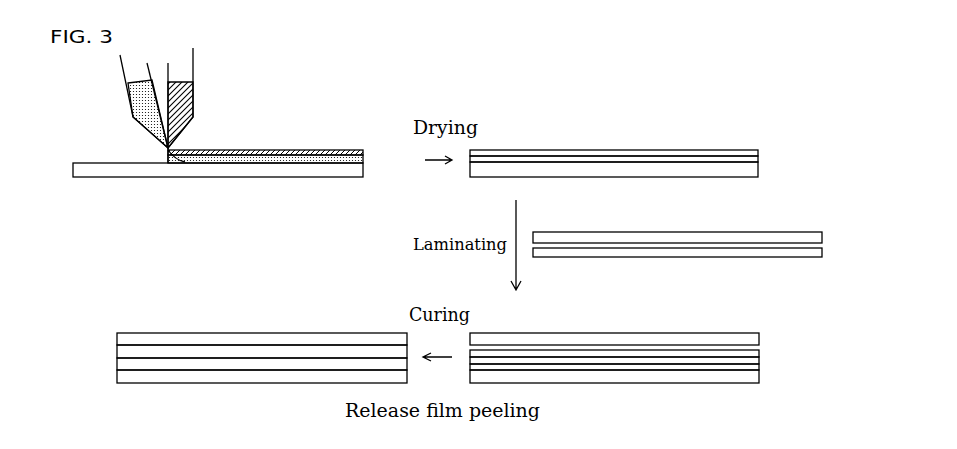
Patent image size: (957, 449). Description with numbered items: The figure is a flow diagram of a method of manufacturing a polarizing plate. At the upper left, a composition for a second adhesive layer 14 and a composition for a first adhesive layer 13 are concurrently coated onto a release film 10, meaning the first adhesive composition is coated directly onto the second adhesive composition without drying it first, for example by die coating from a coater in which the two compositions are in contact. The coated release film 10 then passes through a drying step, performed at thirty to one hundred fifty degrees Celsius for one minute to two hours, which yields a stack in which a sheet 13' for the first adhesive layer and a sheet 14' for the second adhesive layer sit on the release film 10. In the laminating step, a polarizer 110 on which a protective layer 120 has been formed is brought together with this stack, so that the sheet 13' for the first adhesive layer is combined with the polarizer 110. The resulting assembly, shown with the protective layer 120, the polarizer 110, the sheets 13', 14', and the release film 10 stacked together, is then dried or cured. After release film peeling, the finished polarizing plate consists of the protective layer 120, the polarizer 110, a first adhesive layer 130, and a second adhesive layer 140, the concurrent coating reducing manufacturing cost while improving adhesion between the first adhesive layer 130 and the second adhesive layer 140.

The release film 10 is at (348, 176).
The composition for a first adhesive layer 13 is at (286, 119).
The composition for a second adhesive layer 14 is at (243, 128).
The sheet for the first adhesive layer 13' is at (640, 258).
The sheet for the second adhesive layer 14' is at (638, 278).
The protective layer 120 is at (822, 237).
The polarizer 110 is at (822, 249).
The first adhesive layer 130 is at (123, 364).
The second adhesive layer 140 is at (122, 377).